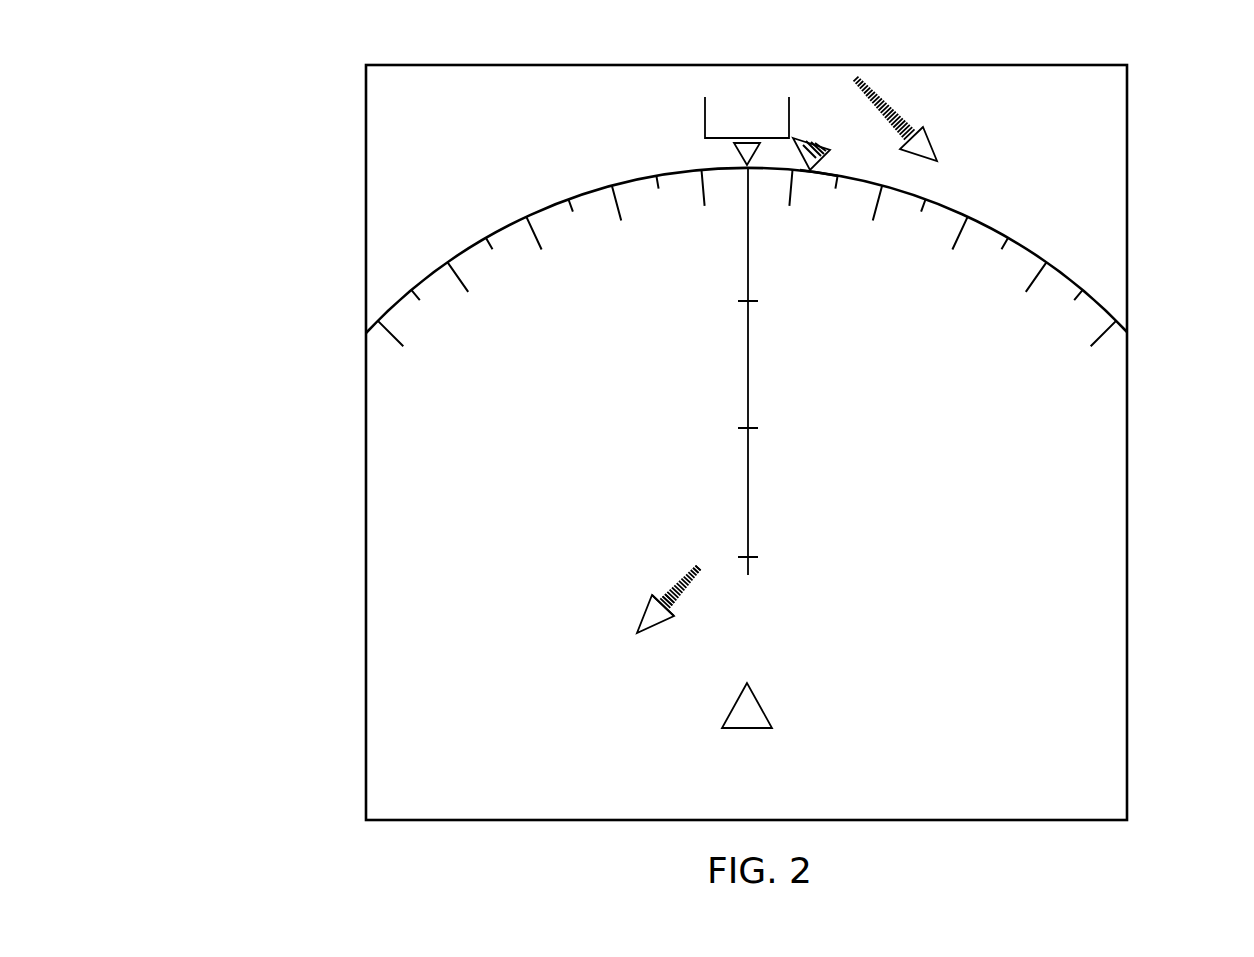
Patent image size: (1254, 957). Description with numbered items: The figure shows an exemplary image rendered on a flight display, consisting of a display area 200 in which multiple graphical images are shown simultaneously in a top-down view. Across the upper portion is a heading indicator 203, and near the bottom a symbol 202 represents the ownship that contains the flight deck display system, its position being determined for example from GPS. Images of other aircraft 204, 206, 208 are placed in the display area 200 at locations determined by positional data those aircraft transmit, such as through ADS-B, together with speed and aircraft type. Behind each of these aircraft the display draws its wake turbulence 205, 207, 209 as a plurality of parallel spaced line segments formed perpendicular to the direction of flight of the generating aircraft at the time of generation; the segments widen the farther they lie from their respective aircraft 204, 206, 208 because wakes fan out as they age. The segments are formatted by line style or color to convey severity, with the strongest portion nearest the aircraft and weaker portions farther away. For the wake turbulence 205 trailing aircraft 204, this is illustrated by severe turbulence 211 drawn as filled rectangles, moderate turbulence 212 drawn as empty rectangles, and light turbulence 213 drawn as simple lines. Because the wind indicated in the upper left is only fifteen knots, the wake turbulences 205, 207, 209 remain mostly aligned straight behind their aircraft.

The display area 200 is at (318, 404).
The symbol 202 is at (728, 719).
The heading indicator 203 is at (1127, 325).
The aircraft 204 is at (640, 622).
The wake turbulence 205 is at (668, 588).
The aircraft 206 is at (822, 150).
The wake turbulence 207 is at (820, 176).
The aircraft 208 is at (928, 162).
The wake turbulence 209 is at (888, 103).
The severe turbulence 211 is at (670, 618).
The moderate turbulence 212 is at (681, 615).
The light turbulence 213 is at (701, 575).